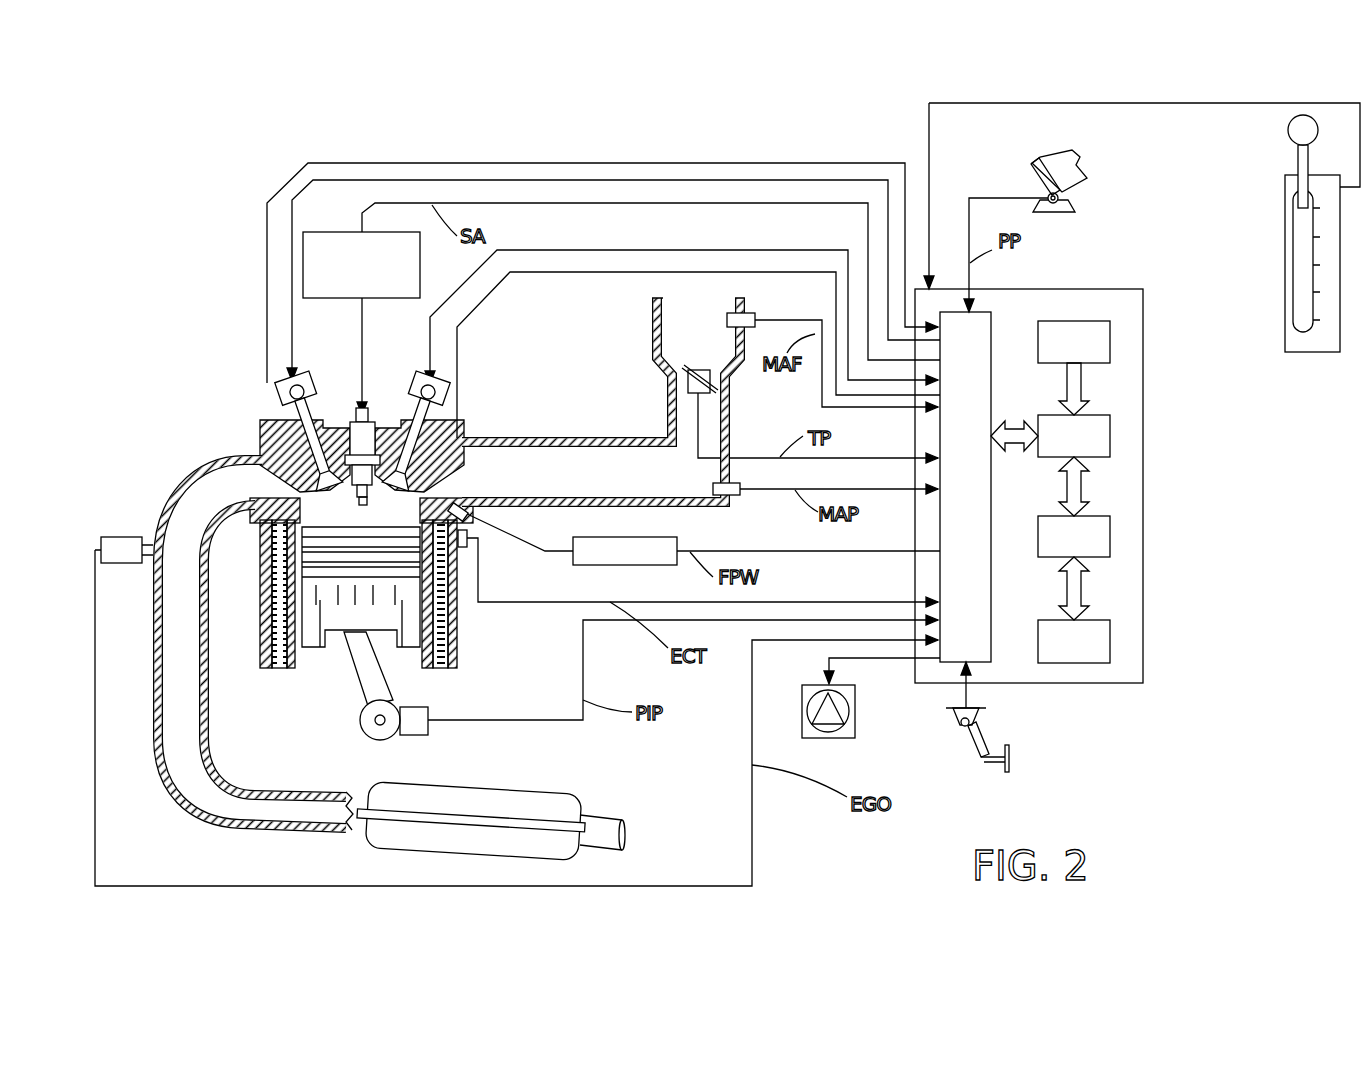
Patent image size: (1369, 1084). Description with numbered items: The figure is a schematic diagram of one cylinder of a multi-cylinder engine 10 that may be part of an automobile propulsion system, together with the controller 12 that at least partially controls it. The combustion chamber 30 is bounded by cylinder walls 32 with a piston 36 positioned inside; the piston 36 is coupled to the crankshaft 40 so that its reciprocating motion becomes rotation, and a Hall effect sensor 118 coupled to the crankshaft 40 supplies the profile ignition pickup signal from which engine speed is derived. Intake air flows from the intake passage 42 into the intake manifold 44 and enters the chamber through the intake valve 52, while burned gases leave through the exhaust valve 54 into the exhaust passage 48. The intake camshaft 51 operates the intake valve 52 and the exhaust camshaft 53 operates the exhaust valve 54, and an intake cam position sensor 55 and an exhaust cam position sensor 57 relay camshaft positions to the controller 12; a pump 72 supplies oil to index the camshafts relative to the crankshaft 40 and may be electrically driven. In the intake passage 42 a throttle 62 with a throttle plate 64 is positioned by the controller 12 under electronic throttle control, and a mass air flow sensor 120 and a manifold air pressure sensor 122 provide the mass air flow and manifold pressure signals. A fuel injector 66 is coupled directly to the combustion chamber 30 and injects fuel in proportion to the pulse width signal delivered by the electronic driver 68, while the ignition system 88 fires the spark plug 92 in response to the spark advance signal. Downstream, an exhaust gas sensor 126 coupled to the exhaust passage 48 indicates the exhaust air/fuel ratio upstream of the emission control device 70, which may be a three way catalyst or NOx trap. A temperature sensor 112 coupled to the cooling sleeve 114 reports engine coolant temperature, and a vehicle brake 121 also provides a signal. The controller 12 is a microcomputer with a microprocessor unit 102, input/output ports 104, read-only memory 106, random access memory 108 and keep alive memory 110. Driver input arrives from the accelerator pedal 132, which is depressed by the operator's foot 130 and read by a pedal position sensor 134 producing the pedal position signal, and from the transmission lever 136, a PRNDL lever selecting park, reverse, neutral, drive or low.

The engine 10 is at (190, 369).
The controller 12 is at (1133, 289).
The combustion chamber 30 is at (347, 543).
The cylinder walls 32 is at (298, 655).
The piston 36 is at (343, 617).
The crankshaft 40 is at (372, 742).
The intake passage 42 is at (708, 348).
The intake manifold 44 is at (643, 486).
The exhaust passage 48 is at (240, 494).
The intake camshaft 51 is at (417, 385).
The intake valve 52 is at (400, 482).
The exhaust camshaft 53 is at (300, 383).
The exhaust valve 54 is at (280, 458).
The intake cam position sensor 55 is at (448, 403).
The exhaust cam position sensor 57 is at (277, 403).
The throttle 62 is at (700, 378).
The throttle plate 64 is at (675, 378).
The fuel injector 66 is at (468, 520).
The electronic driver 68 is at (603, 567).
The emission control device 70 is at (540, 790).
The pump 72 is at (847, 658).
The ignition system 88 is at (318, 232).
The spark plug 92 is at (367, 417).
The microprocessor unit 102 is at (1110, 435).
The input/output ports 104 is at (992, 320).
The read-only memory 106 is at (1110, 340).
The random access memory 108 is at (1110, 537).
The keep alive memory 110 is at (1110, 640).
The temperature sensor 112 is at (477, 547).
The cooling sleeve 114 is at (440, 620).
The Hall effect sensor 118 is at (412, 738).
The mass air flow sensor 120 is at (750, 310).
The vehicle brake 121 is at (960, 713).
The manifold air pressure sensor 122 is at (737, 497).
The exhaust gas sensor 126 is at (101, 540).
The accelerator pedal 130 is at (1042, 178).
The accelerator pedal 132 is at (1080, 162).
The pedal position sensor 134 is at (1063, 198).
The transmission lever 136 is at (1297, 155).